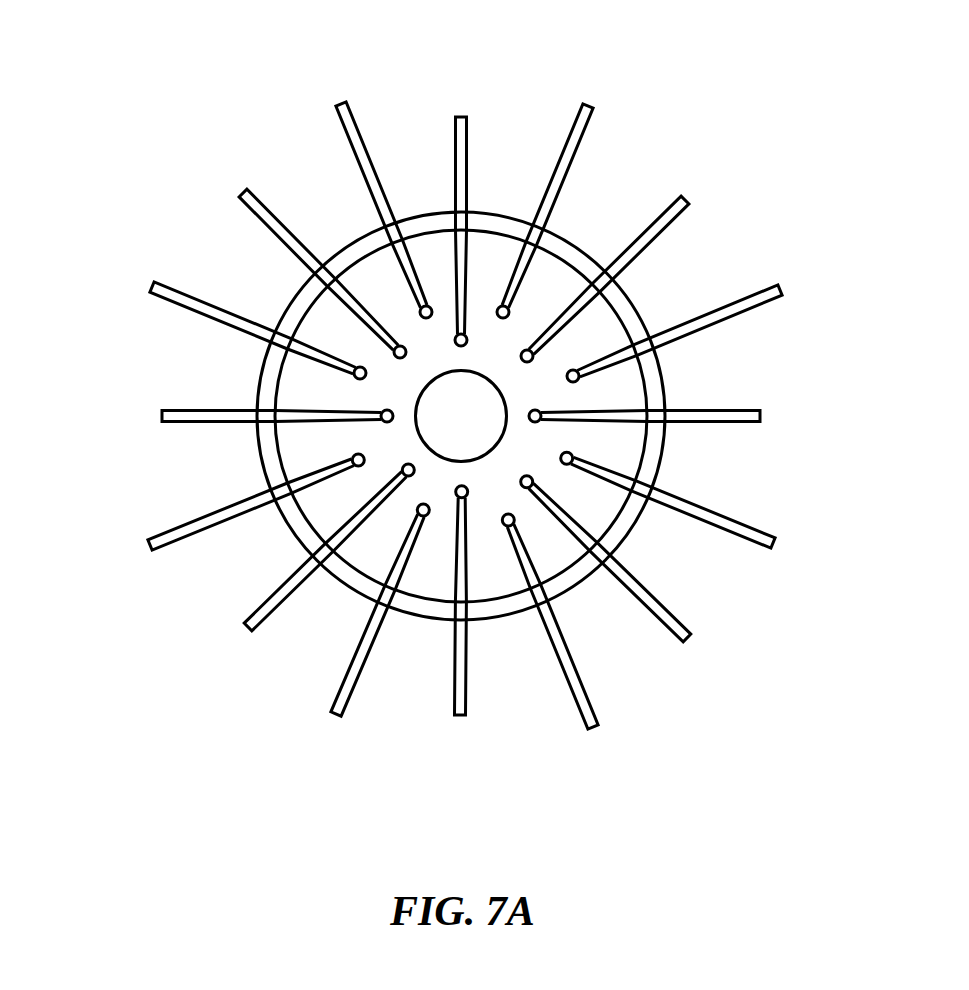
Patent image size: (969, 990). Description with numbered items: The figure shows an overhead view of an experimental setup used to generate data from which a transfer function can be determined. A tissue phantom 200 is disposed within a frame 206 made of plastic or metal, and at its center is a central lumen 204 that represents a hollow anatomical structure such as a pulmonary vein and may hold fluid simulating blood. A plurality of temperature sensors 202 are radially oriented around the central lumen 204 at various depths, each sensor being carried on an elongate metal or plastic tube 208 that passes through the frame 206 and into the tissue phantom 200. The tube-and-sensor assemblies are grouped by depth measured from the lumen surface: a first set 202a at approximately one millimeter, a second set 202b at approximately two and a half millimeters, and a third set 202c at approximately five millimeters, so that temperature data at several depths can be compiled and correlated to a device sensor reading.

The tissue phantom 200 is at (340, 335).
The temperature sensor 202 is at (513, 312).
The first set of tubes with sensors 202a is at (460, 114).
The second set of tubes with sensors 202b is at (243, 190).
The third set of tubes with sensors 202c is at (340, 103).
The central lumen 204 is at (438, 403).
The frame 206 is at (257, 455).
The elongate tube 208 is at (187, 522).